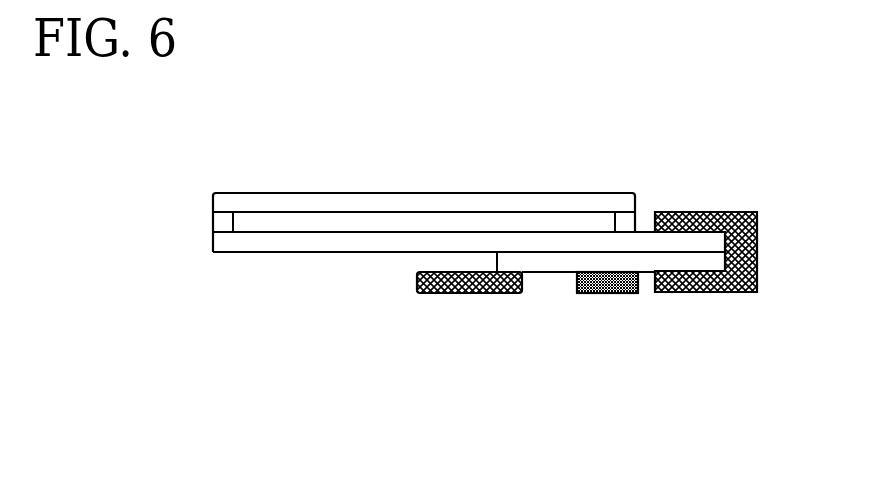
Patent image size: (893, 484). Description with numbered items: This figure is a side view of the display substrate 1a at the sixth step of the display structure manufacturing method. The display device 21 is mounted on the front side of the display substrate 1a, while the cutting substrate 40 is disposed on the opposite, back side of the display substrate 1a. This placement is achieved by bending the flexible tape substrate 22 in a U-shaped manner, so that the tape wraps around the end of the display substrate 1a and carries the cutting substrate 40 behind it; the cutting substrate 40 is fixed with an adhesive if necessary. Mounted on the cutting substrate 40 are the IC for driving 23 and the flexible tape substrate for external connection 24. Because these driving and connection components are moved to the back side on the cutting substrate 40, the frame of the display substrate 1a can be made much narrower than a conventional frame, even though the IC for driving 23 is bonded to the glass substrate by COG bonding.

The display substrate 1a is at (260, 252).
The display device 21 is at (417, 193).
The flexible tape substrate 22 is at (717, 212).
The IC for driving 23 is at (613, 293).
The flexible tape substrate for external connection 24 is at (450, 293).
The cutting substrate 40 is at (552, 258).